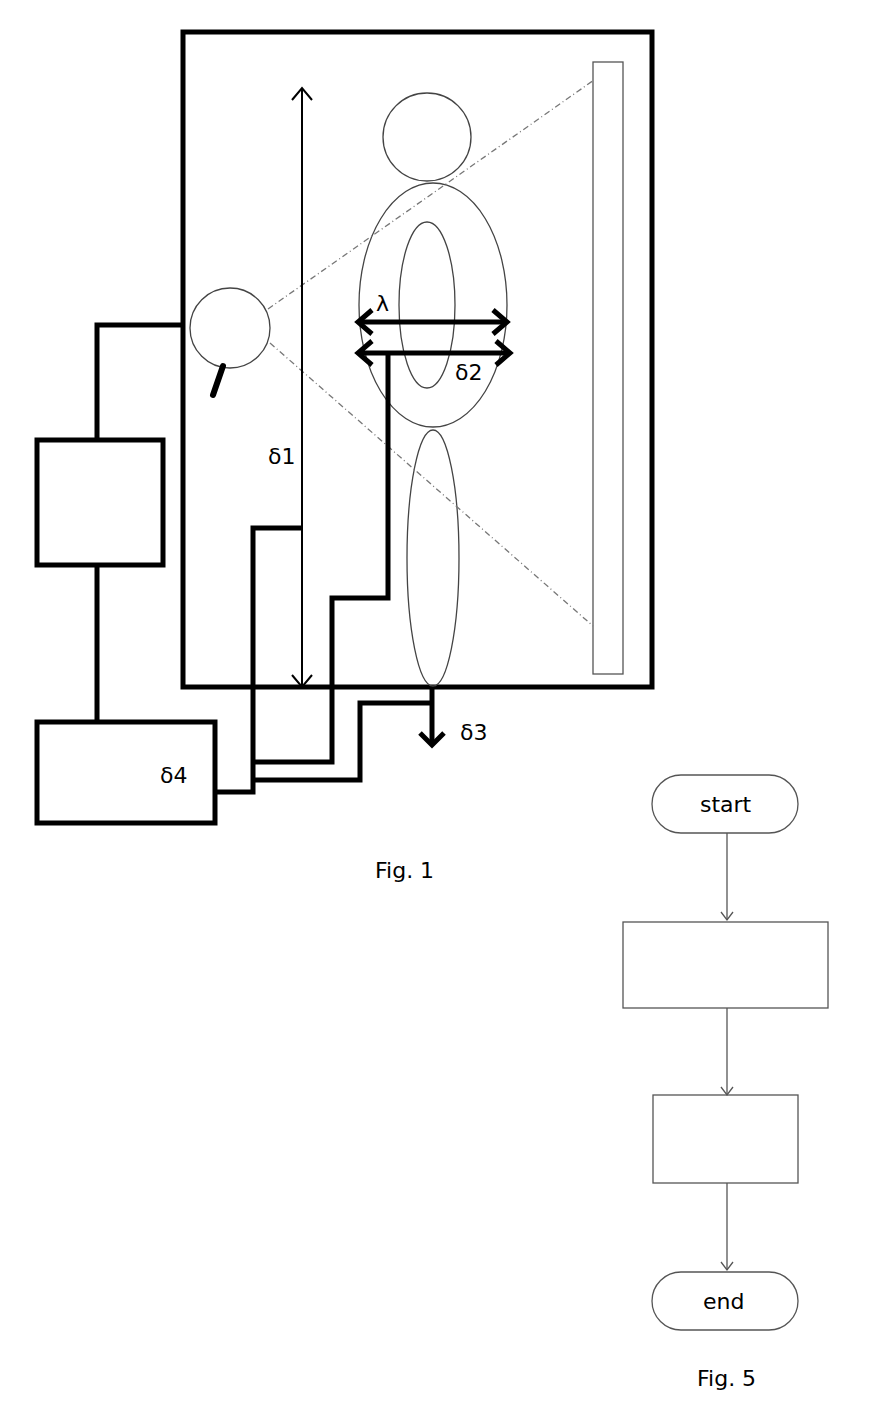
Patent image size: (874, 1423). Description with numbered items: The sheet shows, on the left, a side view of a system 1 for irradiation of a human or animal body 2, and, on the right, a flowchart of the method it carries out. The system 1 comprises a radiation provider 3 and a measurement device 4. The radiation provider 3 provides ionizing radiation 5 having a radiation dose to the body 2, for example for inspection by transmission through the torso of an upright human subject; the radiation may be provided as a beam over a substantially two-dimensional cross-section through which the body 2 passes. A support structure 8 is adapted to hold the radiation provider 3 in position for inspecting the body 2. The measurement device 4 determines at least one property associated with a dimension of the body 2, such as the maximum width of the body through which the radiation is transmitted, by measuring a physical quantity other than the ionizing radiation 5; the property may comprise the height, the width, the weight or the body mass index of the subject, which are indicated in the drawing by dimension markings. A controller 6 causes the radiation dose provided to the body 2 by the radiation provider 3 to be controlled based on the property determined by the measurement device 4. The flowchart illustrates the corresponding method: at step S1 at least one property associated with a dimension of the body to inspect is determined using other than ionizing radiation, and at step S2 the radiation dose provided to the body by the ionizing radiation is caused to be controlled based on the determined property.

In FIG. 1, the system 1 is at (172, 250).
In FIG. 1, the body 2 is at (433, 389).
In FIG. 1, the radiation provider 3 is at (390, 353).
In FIG. 1, the measurement device 4 is at (234, 588).
In FIG. 1, the ionizing radiation 5 is at (580, 368).
In FIG. 1, the controller 6 is at (110, 523).
In FIG. 1, the support structure 8 is at (183, 62).
In FIG. 5, the determining step S1 is at (625, 962).
In FIG. 5, the causing step S2 is at (653, 1138).